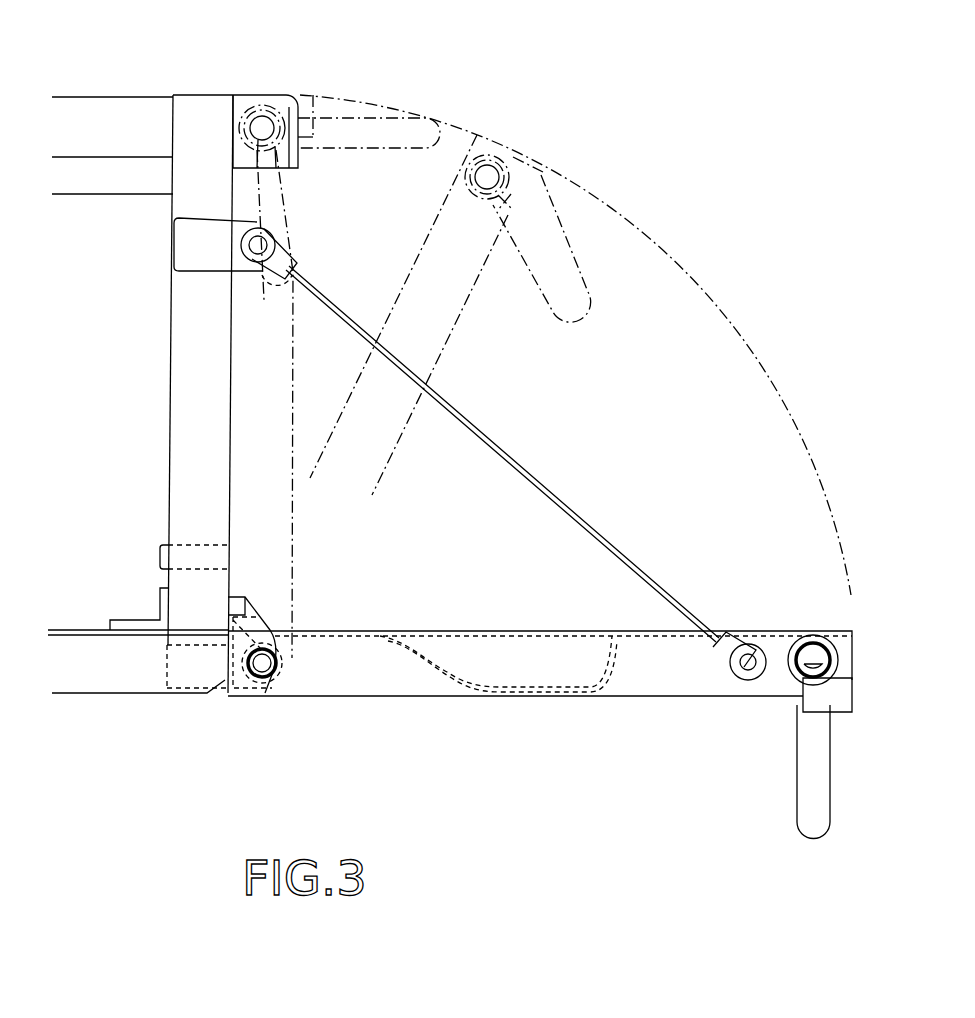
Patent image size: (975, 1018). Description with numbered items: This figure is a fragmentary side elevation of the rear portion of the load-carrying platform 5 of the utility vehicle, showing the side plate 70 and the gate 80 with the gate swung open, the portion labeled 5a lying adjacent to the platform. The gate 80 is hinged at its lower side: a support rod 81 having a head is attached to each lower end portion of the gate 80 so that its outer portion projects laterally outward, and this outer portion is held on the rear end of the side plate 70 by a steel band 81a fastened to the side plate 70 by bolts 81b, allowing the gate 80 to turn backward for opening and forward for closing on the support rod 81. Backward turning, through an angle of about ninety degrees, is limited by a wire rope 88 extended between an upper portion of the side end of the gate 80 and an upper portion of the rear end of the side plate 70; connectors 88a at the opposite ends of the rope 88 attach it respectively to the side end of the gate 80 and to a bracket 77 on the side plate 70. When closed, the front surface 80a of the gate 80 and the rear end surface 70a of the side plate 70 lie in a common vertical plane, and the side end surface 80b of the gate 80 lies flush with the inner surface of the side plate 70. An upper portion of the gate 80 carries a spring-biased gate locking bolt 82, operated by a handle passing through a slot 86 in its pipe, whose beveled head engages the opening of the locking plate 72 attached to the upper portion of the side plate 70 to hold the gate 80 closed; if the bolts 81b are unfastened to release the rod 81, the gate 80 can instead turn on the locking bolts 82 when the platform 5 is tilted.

The load-carrying platform 5 is at (118, 724).
The frame rail 5a is at (65, 636).
The side plate 70 is at (103, 210).
The rear end surface 70a is at (230, 360).
The locking plate 72 is at (298, 97).
The bracket 77 is at (245, 273).
The gate 80 is at (540, 665).
The front surface 80a is at (327, 625).
The side end surface 80b is at (378, 655).
The support rod 81 is at (288, 674).
The steel band 81a is at (277, 677).
The bolt 81b is at (252, 596).
The gate locking bolt 82 is at (813, 650).
The slot 86 is at (807, 817).
The wire rope 88 is at (503, 448).
The connector 88a is at (283, 265).